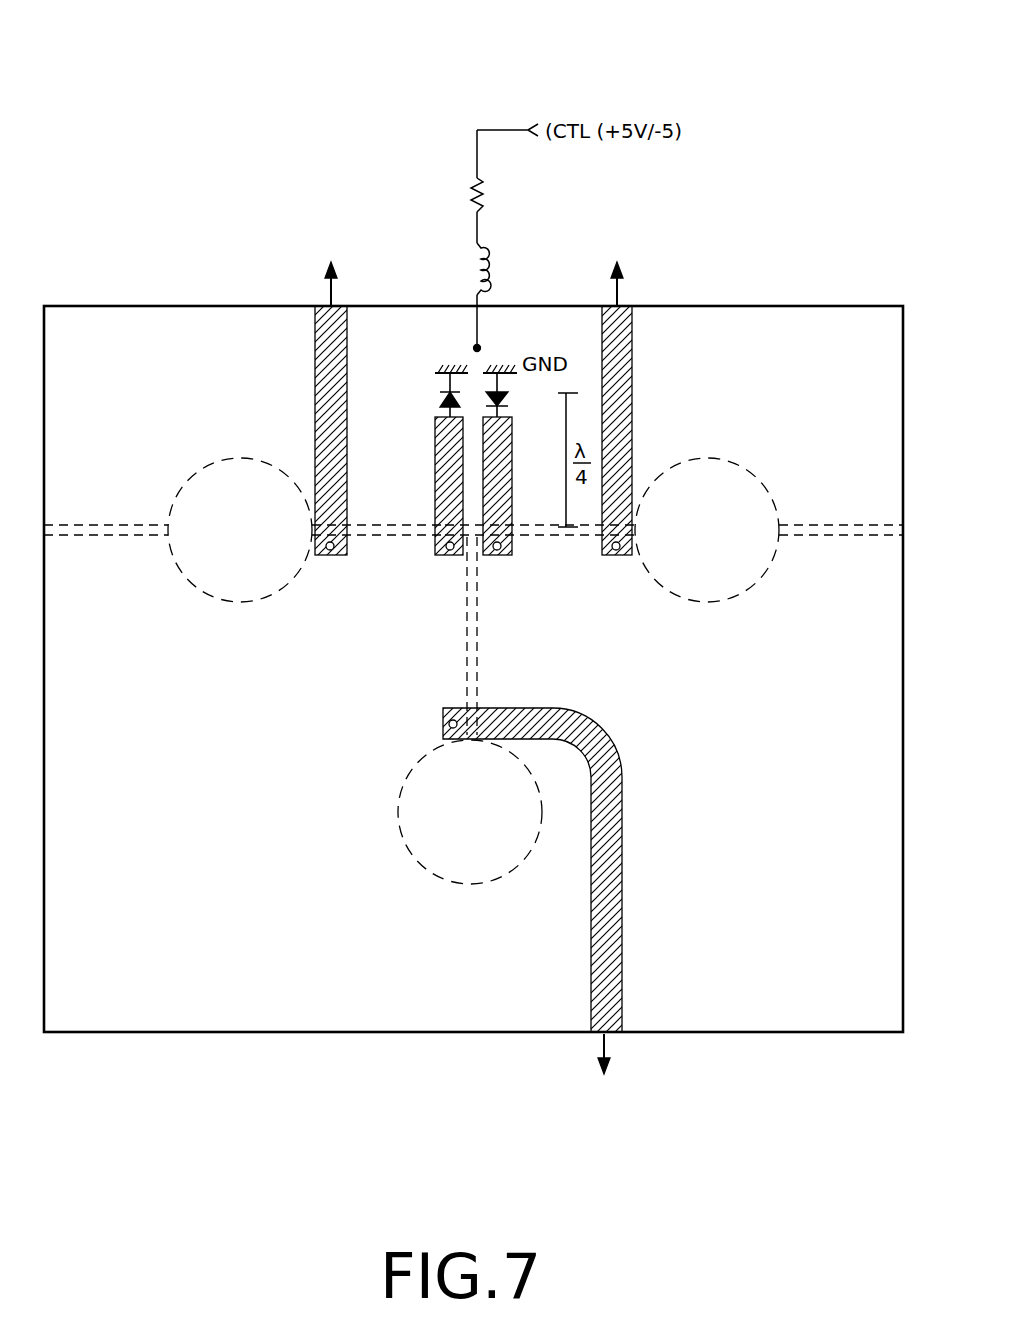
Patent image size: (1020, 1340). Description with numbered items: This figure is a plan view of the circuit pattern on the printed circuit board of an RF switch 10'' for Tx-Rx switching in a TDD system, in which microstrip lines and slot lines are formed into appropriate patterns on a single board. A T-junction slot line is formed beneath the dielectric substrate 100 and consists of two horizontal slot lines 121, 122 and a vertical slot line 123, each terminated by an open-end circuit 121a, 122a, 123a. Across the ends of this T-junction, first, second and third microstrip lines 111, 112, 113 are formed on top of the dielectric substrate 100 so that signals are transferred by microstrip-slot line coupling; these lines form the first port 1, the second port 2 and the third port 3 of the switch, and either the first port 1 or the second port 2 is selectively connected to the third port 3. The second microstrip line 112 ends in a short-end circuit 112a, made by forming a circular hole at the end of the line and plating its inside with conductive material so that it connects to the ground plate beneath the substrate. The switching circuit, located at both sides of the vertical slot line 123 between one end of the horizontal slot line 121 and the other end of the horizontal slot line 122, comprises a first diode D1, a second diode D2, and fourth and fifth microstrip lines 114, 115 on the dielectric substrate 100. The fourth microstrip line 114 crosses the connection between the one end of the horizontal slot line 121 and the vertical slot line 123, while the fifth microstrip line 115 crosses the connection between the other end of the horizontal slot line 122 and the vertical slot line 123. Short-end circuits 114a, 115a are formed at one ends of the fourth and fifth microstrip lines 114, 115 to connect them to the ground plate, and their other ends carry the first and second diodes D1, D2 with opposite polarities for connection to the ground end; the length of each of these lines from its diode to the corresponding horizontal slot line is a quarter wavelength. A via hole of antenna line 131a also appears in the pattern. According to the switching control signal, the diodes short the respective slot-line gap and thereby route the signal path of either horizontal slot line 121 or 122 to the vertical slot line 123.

The RF switch 10'' is at (191, 36).
The dielectric substrate 100 is at (140, 977).
The first microstrip line 111 is at (315, 372).
The second microstrip line 112 is at (632, 394).
The third microstrip line 113 is at (622, 890).
The fourth microstrip line 114 is at (435, 452).
The fifth microstrip line 115 is at (512, 440).
The horizontal slot line 121 is at (372, 538).
The horizontal slot line 122 is at (575, 540).
The vertical slot line 123 is at (479, 660).
The open-end circuit 121a is at (270, 547).
The open-end circuit 122a is at (736, 547).
The open-end circuit 123a is at (502, 826).
The short-end circuit 112a is at (616, 556).
The short-end circuit 114a is at (446, 556).
The short-end circuit 115a is at (497, 556).
The via hole of antenna line 131a is at (443, 716).
The first diode D1 is at (428, 395).
The second diode D2 is at (517, 395).
The first port 1 is at (343, 288).
The second port 2 is at (628, 288).
The third port 3 is at (611, 1054).